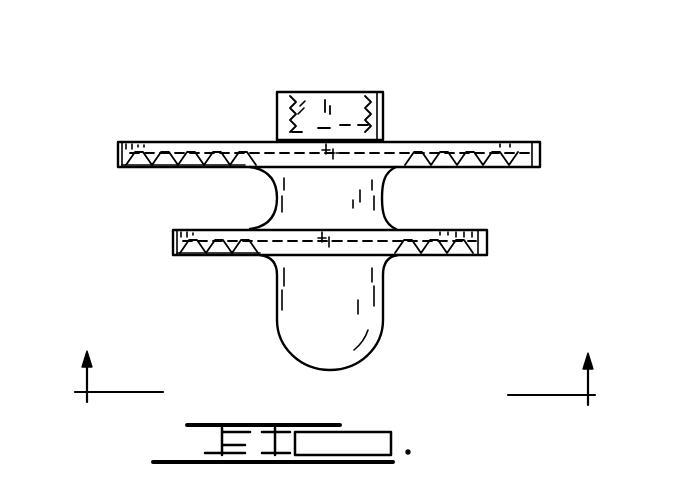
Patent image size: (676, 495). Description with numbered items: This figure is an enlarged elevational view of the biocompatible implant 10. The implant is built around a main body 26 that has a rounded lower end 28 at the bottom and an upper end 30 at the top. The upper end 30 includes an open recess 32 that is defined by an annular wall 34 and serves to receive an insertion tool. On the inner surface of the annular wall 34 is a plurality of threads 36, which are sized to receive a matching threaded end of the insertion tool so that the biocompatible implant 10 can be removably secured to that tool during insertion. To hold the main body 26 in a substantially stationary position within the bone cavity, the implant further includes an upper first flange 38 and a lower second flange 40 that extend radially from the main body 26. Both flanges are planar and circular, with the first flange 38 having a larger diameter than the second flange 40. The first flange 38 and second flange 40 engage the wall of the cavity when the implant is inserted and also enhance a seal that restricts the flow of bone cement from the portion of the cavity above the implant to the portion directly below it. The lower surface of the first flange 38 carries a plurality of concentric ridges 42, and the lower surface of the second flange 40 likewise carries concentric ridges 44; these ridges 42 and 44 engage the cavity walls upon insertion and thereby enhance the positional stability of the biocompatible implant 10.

The biocompatible implant 10 is at (247, 52).
The main body 26 is at (277, 195).
The rounded lower end 28 is at (288, 345).
The upper end 30 is at (277, 98).
The open recess 32 is at (335, 110).
The annular wall 34 is at (283, 125).
The threads 36 is at (300, 115).
The first flange 38 is at (118, 143).
The second flange 40 is at (173, 232).
The concentric ridges 42 is at (150, 167).
The concentric ridges 44 is at (200, 255).